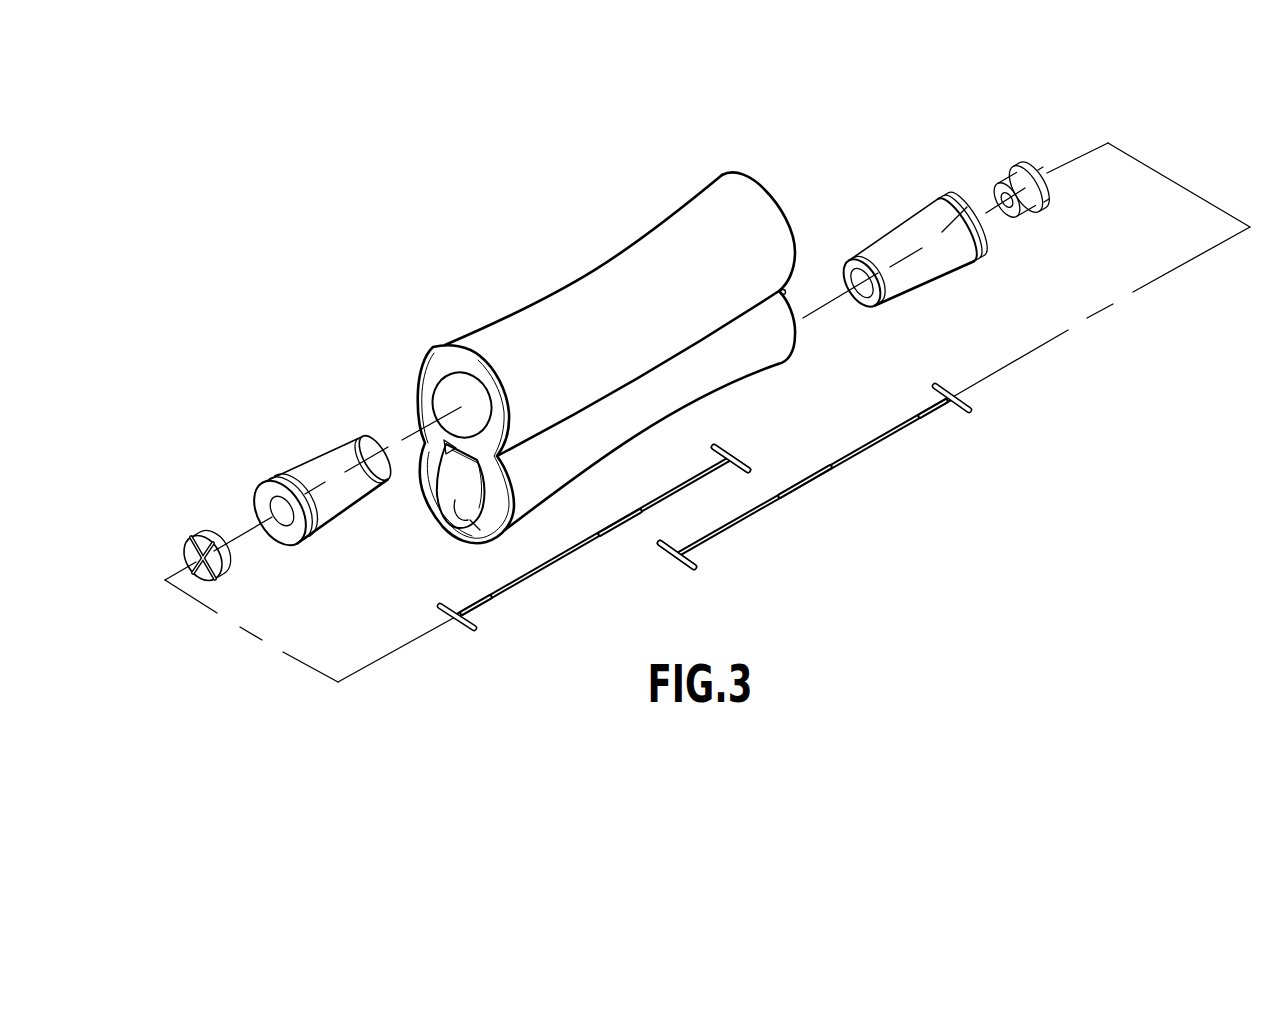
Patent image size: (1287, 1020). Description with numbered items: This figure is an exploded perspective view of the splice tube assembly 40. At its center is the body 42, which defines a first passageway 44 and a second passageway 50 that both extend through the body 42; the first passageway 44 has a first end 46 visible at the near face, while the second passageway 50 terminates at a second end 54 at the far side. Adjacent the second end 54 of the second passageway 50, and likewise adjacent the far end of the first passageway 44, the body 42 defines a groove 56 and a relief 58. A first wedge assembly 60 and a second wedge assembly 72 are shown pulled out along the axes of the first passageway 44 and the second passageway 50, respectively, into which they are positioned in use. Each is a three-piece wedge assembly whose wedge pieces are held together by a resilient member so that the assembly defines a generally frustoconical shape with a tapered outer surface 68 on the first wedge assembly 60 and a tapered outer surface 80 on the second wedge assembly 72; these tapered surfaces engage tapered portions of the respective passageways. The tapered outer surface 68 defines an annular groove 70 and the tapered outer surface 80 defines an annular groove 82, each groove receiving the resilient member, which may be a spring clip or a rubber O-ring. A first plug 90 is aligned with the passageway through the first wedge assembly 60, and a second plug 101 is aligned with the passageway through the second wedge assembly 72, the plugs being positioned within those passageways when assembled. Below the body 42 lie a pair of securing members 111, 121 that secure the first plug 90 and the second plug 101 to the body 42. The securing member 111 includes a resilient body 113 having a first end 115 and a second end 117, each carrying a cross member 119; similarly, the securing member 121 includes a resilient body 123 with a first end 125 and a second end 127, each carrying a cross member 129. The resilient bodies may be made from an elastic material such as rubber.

The splice tube assembly 40 is at (558, 199).
The body 42 is at (655, 270).
The first passageway 44 is at (458, 397).
The first end 46 is at (427, 358).
The second passageway 50 is at (474, 478).
The second end 54 is at (478, 523).
The groove 56 is at (448, 452).
The relief 58 is at (478, 523).
The first wedge assembly 60 is at (337, 463).
The tapered outer surface 68 is at (368, 452).
The annular groove 70 is at (287, 470).
The second wedge assembly 72 is at (940, 230).
The tapered outer surface 80 is at (905, 222).
The annular groove 82 is at (966, 203).
The first plug 90 is at (192, 540).
The second plug 101 is at (1027, 163).
The securing member 111 is at (602, 533).
The resilient body 113 is at (628, 512).
The first end 115 is at (466, 612).
The second end 117 is at (725, 455).
The cross member 119 is at (460, 630).
The securing member 121 is at (908, 419).
The resilient body 123 is at (800, 480).
The first end 125 is at (952, 405).
The second end 127 is at (705, 547).
The cross member 129 is at (972, 404).